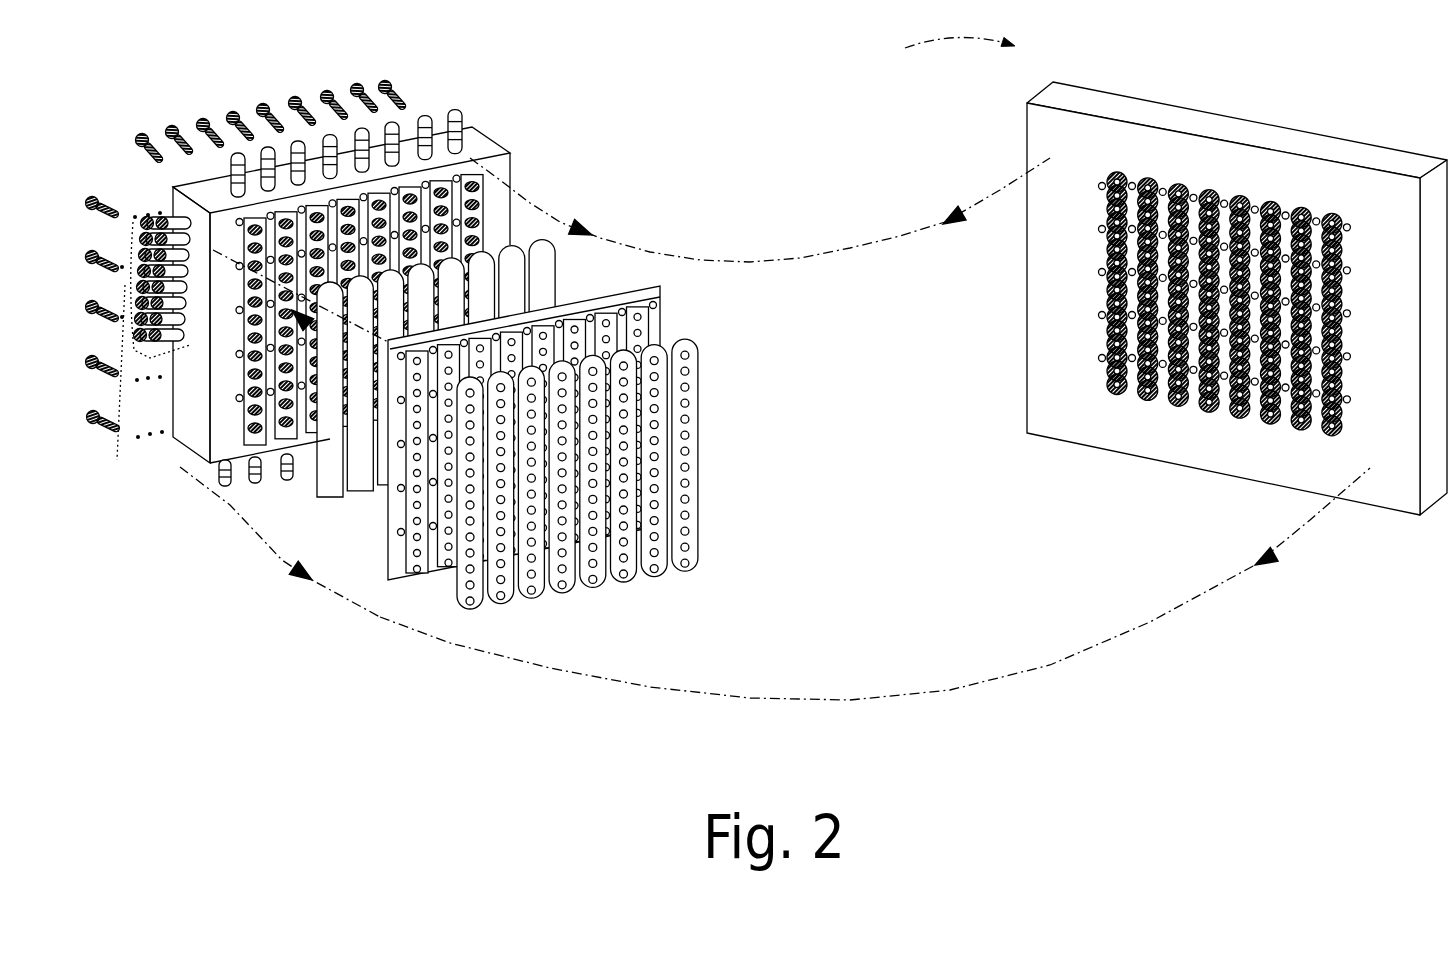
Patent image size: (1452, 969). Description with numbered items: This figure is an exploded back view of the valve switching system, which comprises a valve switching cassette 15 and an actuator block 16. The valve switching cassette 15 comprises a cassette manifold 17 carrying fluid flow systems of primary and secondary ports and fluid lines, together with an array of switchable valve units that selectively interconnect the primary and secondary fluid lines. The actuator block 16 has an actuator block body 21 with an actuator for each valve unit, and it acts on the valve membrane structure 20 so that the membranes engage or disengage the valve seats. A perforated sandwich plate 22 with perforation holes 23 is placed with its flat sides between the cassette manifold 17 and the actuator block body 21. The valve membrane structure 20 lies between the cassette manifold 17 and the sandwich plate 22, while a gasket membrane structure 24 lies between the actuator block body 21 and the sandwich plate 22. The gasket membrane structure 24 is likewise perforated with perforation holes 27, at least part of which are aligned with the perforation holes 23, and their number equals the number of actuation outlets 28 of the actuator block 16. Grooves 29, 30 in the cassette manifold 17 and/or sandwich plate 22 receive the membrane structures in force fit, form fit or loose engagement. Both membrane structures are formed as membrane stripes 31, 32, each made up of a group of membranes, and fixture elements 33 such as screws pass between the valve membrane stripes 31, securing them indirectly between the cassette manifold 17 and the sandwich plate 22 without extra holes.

The valve switching cassette 15 is at (460, 697).
The actuator block 16 is at (940, 50).
The cassette manifold 17 is at (173, 205).
The valve membrane structure 20 is at (434, 366).
The actuator block body 21 is at (1055, 98).
The perforated sandwich plate 22 is at (662, 290).
The perforation holes 23 is at (640, 325).
The gasket membrane structure 24 is at (735, 697).
The perforation holes 27 is at (503, 597).
The actuation outlets 28 is at (1213, 193).
The grooves 29 is at (270, 380).
The grooves 30 is at (449, 571).
The valve membrane stripes 31 is at (568, 228).
The membrane stripes 32 is at (627, 578).
The fixture elements 33 is at (237, 113).